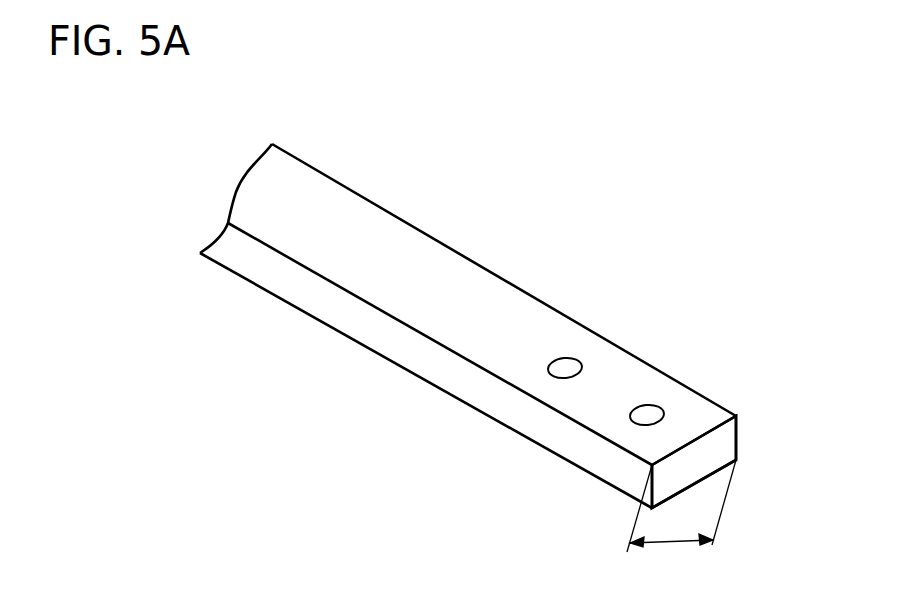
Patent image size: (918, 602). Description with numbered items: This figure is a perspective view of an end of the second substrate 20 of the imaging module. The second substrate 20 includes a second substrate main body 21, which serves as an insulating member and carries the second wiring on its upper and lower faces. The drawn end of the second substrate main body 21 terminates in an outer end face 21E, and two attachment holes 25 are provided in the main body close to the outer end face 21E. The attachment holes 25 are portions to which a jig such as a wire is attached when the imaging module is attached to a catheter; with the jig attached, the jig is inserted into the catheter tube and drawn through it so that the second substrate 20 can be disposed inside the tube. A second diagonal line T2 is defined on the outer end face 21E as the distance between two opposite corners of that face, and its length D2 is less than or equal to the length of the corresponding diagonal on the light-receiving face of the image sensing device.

The second substrate 20 is at (510, 347).
The second substrate main body 21 is at (510, 326).
The outer end face 21E is at (725, 433).
The attachment holes 25 is at (657, 418).
The second diagonal line T2 is at (695, 462).
The length of the second diagonal line D2 is at (681, 517).